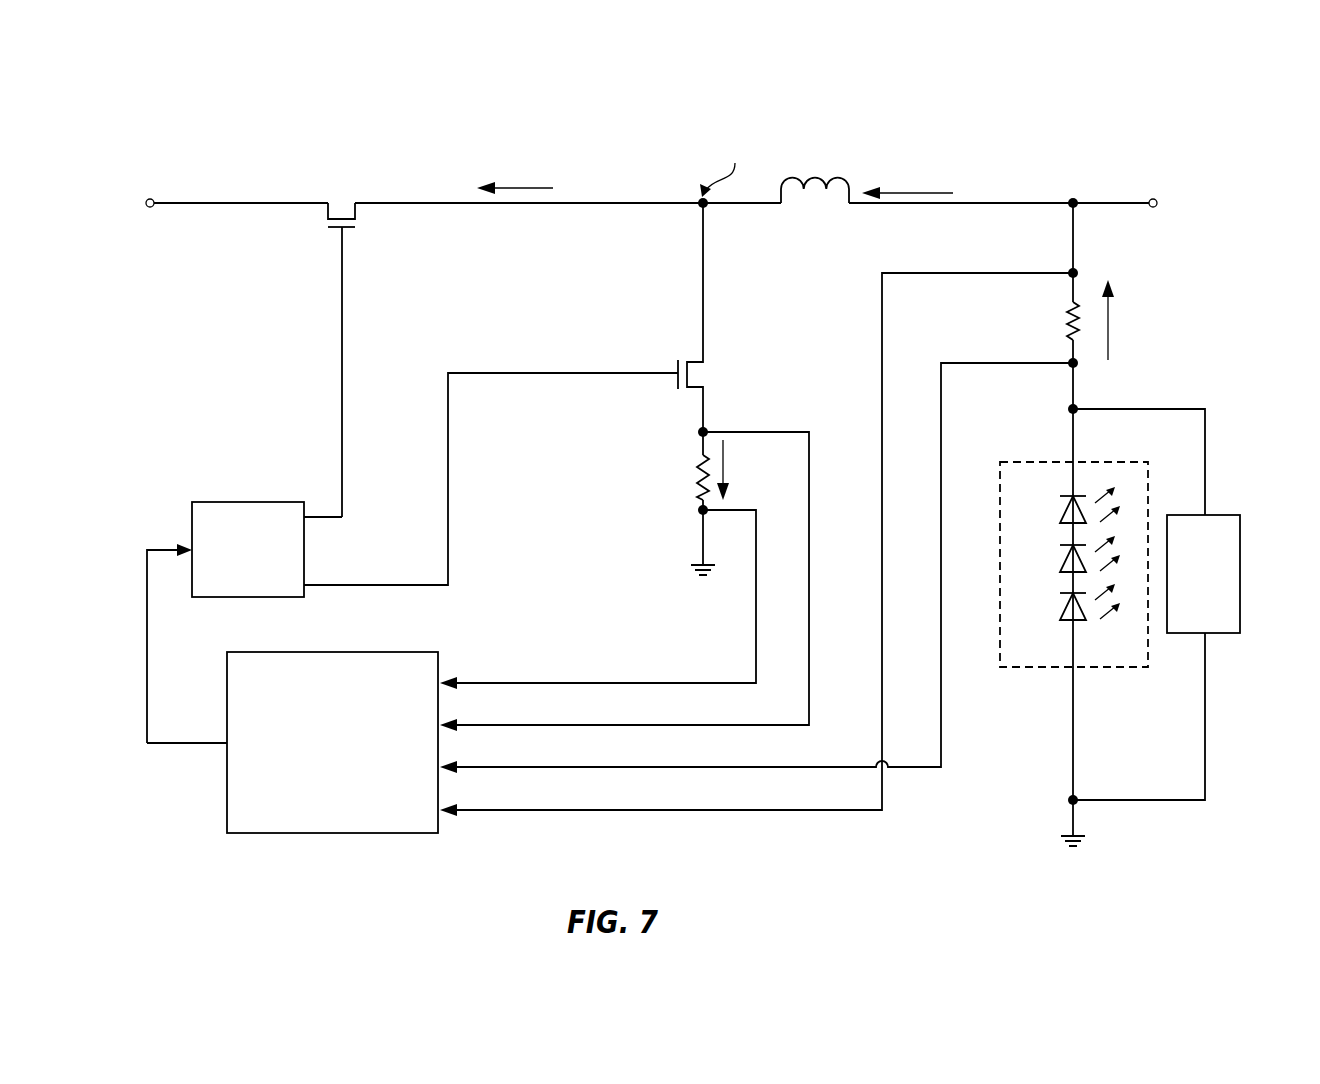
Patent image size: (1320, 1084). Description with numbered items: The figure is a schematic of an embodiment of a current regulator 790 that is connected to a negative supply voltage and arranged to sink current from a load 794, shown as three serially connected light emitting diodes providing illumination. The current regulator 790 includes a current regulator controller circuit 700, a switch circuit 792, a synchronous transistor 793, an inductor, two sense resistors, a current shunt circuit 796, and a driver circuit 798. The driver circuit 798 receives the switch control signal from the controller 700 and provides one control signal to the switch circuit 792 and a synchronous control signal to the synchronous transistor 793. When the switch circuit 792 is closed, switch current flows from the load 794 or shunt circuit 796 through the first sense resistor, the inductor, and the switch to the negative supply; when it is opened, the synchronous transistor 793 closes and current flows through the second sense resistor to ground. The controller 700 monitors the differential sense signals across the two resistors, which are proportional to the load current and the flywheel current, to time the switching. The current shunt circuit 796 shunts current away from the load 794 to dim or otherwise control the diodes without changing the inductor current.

The current regulator 790 is at (1026, 150).
The switch circuit 792 is at (353, 199).
The synchronous transistor 793 is at (705, 381).
The load 794 is at (1035, 462).
The current shunt circuit 796 is at (1240, 562).
The driver circuit 798 is at (265, 490).
The current regulator controller circuit 700 is at (333, 652).